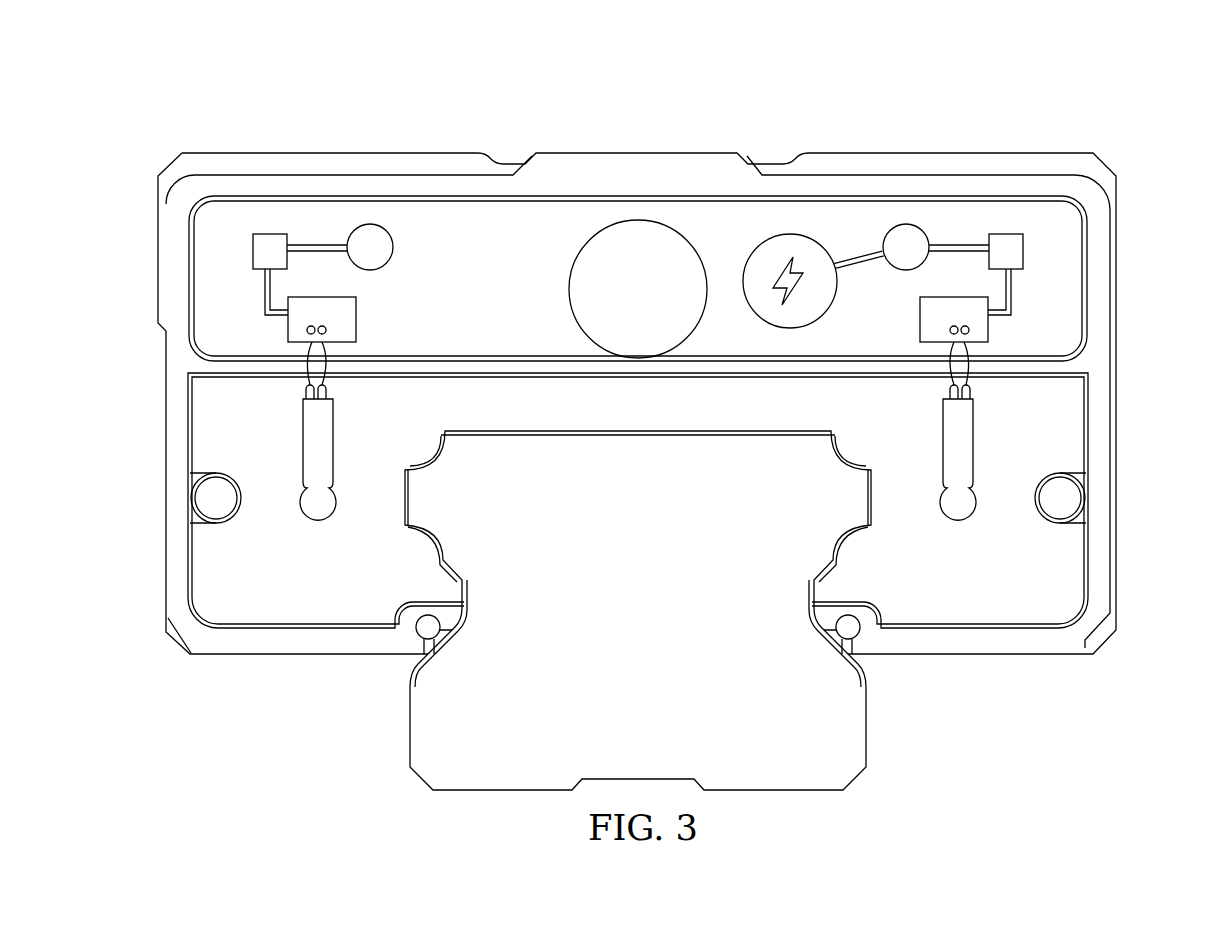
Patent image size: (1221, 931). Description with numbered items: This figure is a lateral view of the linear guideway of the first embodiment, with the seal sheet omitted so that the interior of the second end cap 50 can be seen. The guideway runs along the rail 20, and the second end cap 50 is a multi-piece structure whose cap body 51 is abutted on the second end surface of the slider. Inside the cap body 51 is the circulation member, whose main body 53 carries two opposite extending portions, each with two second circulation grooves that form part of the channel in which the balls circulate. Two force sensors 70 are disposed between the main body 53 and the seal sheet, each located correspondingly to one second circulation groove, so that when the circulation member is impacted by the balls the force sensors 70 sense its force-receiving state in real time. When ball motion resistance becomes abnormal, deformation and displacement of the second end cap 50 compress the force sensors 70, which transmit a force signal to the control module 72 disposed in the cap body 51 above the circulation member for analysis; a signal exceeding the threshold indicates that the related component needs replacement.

The rail 20 is at (437, 765).
The second end cap 50 is at (1083, 120).
The cap body 51 is at (1097, 229).
The main body 53 is at (997, 587).
The force sensor 70 is at (313, 462).
The control module 72 is at (212, 341).